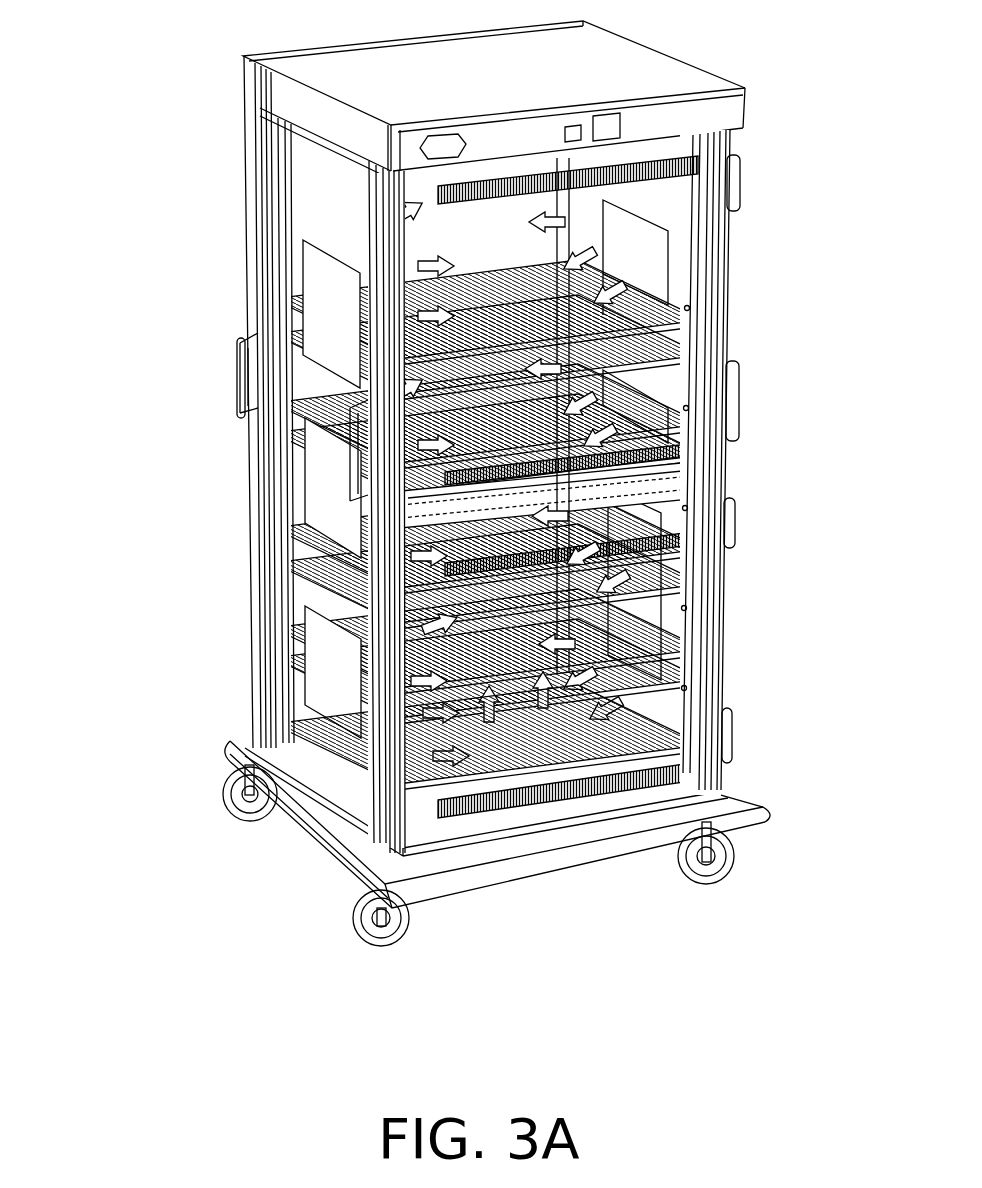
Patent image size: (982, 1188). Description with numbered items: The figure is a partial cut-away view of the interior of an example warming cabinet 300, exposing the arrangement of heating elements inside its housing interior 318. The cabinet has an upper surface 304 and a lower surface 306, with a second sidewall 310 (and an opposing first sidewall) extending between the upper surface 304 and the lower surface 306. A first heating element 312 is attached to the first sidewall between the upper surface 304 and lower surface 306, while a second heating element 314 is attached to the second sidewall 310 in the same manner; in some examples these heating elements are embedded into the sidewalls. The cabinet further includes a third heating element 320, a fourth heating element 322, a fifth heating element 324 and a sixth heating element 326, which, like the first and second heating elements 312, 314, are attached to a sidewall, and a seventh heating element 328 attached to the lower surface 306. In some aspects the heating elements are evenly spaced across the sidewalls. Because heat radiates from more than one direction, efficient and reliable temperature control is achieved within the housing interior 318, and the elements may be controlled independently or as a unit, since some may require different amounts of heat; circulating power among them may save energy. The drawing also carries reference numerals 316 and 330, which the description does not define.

The warming cabinet 300 is at (163, 158).
The upper surface 304 is at (574, 148).
The lower surface 306 is at (344, 762).
The second sidewall 310 is at (665, 198).
The first heating element 312 is at (308, 296).
The second heating element 314 is at (652, 243).
The rear frame 316 is at (235, 180).
The housing interior 318 is at (390, 667).
The third heating element 320 is at (308, 499).
The fourth heating element 322 is at (652, 398).
The fifth heating element 324 is at (312, 642).
The sixth heating element 326 is at (637, 643).
The seventh heating element 328 is at (542, 775).
The air flow openings 330 is at (308, 387).